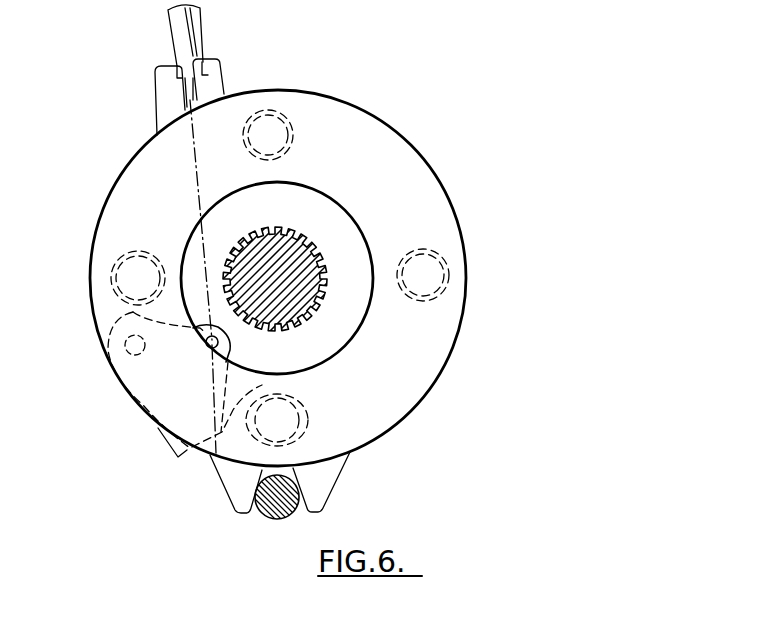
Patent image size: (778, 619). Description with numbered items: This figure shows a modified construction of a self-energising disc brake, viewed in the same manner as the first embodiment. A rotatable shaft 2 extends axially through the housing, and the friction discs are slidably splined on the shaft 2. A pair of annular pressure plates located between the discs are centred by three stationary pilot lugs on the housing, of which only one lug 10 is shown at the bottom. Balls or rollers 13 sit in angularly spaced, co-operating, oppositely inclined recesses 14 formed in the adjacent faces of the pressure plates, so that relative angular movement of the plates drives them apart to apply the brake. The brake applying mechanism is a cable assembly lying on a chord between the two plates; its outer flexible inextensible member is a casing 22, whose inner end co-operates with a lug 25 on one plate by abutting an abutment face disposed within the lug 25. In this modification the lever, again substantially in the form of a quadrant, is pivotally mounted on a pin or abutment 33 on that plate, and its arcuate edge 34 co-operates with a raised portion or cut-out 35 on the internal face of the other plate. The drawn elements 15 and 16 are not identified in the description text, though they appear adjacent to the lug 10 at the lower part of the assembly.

The rotatable shaft 2 is at (305, 260).
The stationary pilot lug 10 is at (283, 508).
The balls or rollers 13 is at (427, 270).
The recesses 14 is at (150, 262).
The right lug 15 is at (323, 488).
The left lug 16 is at (240, 498).
The casing 22 is at (197, 27).
The lug 25 is at (213, 68).
The pin or abutment 33 is at (130, 347).
The arcuate edge 34 is at (183, 458).
The raised portion or cut-out 35 is at (216, 453).